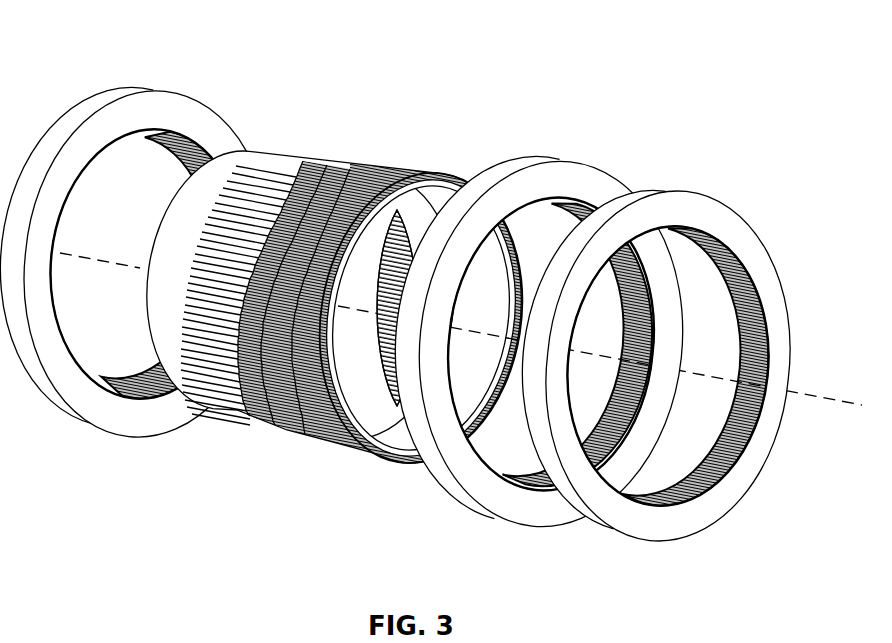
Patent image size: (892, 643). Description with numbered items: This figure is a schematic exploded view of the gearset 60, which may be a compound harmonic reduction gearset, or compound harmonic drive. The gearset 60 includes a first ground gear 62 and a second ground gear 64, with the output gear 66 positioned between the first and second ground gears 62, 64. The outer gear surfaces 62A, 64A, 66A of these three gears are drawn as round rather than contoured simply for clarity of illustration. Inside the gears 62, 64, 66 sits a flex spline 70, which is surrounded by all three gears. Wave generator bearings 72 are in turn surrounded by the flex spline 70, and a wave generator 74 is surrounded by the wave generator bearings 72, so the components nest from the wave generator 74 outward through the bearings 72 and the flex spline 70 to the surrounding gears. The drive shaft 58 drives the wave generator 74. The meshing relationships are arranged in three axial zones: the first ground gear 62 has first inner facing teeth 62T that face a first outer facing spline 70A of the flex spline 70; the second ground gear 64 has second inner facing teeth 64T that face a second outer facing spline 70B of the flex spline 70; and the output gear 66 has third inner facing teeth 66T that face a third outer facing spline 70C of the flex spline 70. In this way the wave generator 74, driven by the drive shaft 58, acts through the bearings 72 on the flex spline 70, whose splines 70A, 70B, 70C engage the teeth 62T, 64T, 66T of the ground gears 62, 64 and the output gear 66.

The drive shaft 58 is at (822, 395).
The gearset 60 is at (736, 84).
The first ground gear 62 is at (664, 192).
The outer gear surface 62A is at (581, 512).
The first inner facing teeth 62T is at (710, 480).
The second ground gear 64 is at (149, 91).
The outer gear surface 64A is at (62, 413).
The second inner facing teeth 64T is at (135, 388).
The output gear 66 is at (560, 153).
The outer gear surface 66A is at (450, 492).
The third inner facing teeth 66T is at (712, 417).
The flex spline 70 is at (428, 182).
The first outer facing spline 70A is at (367, 452).
The second outer facing spline 70B is at (282, 430).
The third outer facing spline 70C is at (335, 448).
The wave generator bearings 72 is at (312, 157).
The wave generator 74 is at (243, 162).